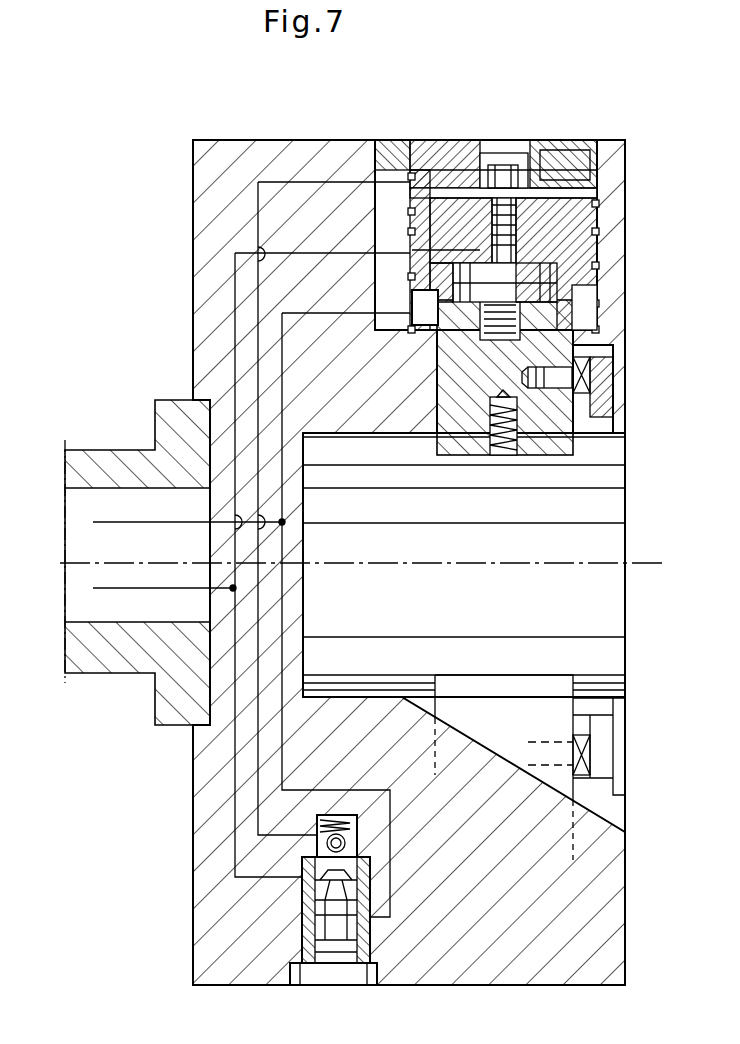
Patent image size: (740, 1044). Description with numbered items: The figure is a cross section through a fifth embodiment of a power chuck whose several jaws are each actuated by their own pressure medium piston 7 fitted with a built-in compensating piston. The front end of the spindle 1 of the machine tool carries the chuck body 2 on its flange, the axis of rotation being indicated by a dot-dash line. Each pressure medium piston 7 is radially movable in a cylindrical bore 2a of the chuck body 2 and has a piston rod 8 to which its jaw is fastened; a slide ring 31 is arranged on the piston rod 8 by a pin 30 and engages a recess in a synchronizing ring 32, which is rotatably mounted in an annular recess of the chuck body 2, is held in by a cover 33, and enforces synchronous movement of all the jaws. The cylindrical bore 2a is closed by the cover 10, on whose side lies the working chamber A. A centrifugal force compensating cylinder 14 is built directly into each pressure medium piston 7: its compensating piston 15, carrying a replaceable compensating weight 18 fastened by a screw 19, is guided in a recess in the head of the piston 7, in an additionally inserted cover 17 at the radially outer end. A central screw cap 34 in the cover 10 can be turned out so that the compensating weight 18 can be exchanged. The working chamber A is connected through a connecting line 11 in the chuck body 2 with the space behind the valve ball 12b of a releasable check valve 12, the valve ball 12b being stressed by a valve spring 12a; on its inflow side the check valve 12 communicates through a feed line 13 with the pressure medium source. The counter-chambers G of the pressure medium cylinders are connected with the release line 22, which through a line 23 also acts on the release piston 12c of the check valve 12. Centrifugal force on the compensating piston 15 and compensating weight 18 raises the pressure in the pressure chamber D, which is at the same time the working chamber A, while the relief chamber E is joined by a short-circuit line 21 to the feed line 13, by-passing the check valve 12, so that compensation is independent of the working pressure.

The spindle 1 is at (84, 458).
The chuck body 2 is at (255, 152).
The cylindrical bore 2a is at (413, 240).
The pressure medium piston 7 is at (578, 252).
The piston rod 8 is at (558, 350).
The cover 10 is at (388, 145).
The connecting line 11 is at (283, 623).
The releasable check valve 12 is at (300, 930).
The valve spring 12a is at (315, 830).
The valve ball 12b is at (318, 850).
The release piston 12c is at (305, 905).
The feed line 13 is at (93, 590).
The centrifugal force compensating cylinder 14 is at (492, 243).
The compensating piston 15 is at (547, 217).
The cover 17 is at (440, 183).
The compensating weight 18 is at (527, 183).
The screw 19 is at (509, 228).
The short-circuit line 21 is at (235, 284).
The release line 22 is at (93, 524).
The line 23 is at (360, 790).
The pin 30 is at (552, 375).
The slide ring 31 is at (582, 397).
The synchronizing ring 32 is at (598, 728).
The cover 33 is at (620, 753).
The screw cap 34 is at (505, 163).
The working chamber A is at (567, 165).
The pressure chamber D is at (453, 186).
The relief chamber E is at (455, 325).
The counter-chamber G is at (595, 300).